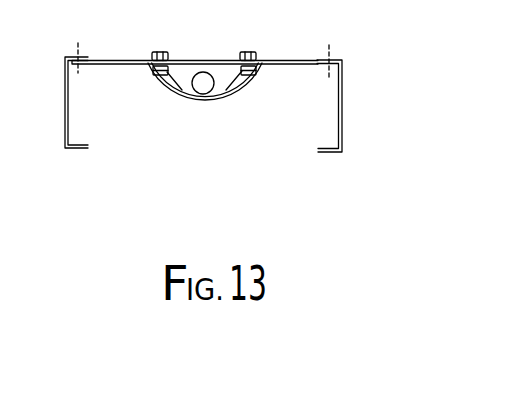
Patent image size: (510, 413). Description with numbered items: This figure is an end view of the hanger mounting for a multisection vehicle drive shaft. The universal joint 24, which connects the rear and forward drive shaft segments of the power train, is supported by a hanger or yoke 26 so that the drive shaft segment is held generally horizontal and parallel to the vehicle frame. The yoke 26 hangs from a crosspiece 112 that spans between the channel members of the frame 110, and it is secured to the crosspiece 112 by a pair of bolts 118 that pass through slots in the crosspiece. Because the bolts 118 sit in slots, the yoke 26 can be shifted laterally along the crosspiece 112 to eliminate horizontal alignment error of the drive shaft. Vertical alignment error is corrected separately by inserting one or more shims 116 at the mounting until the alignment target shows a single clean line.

The universal joint 24 is at (207, 86).
The hanger 26 is at (181, 99).
The frame 110 is at (342, 100).
The crosspiece 112 is at (283, 60).
The shim 116 is at (147, 65).
The bolt 118 is at (162, 52).